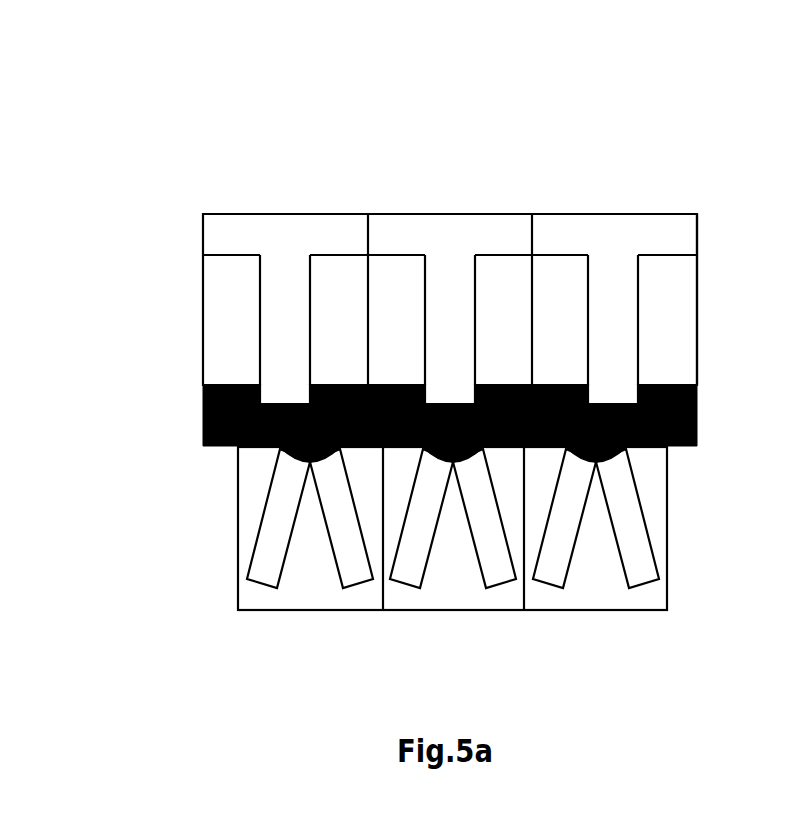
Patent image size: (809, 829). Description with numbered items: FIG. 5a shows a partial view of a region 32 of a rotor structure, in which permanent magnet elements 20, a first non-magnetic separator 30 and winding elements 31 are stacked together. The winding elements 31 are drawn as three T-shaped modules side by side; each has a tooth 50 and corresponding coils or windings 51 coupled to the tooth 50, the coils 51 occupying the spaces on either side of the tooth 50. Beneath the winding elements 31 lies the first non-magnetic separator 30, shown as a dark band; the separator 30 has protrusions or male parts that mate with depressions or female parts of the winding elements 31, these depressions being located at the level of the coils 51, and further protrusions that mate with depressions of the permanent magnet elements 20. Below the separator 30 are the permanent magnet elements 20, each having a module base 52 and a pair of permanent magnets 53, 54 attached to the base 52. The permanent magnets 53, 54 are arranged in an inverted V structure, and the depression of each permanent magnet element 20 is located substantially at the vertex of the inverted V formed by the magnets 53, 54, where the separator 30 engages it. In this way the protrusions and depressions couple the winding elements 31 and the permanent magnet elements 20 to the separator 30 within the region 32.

The permanent magnet element 20 is at (673, 547).
The first non-magnetic separator 30 is at (703, 413).
The winding element 31 is at (705, 279).
The region 32 is at (572, 169).
The tooth 50 is at (283, 242).
The coil 51 is at (223, 315).
The module base 52 is at (313, 592).
The permanent magnet 53 is at (402, 585).
The permanent magnet 54 is at (502, 580).